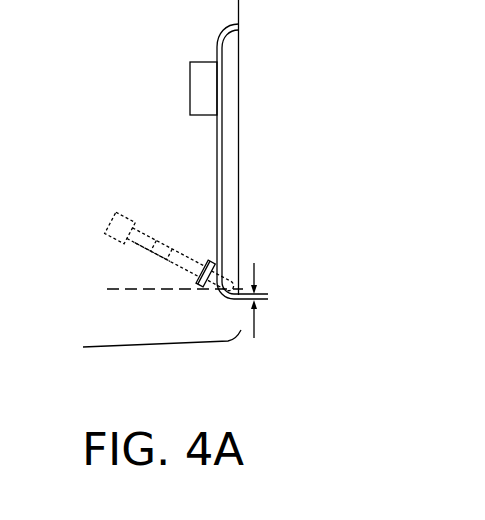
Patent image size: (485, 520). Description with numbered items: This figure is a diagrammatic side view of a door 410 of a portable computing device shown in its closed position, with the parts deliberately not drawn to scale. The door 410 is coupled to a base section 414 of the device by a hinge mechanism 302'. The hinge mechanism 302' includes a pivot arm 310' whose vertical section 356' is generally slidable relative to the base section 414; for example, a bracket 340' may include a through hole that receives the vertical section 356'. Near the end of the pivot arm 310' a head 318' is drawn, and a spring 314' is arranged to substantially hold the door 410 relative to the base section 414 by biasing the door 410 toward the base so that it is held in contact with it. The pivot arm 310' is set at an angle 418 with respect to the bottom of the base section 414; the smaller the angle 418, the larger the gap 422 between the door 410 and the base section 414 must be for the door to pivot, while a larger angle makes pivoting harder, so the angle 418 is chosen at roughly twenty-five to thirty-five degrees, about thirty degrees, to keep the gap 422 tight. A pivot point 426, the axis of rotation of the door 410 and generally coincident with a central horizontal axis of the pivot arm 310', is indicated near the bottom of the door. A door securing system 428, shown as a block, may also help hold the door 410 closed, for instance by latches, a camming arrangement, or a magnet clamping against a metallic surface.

The door 410 is at (228, 61).
The door securing system 428 is at (207, 95).
The vertical section 356' is at (239, 195).
The pivot point 426 is at (229, 287).
The gap 422 is at (256, 264).
The base section 414 is at (238, 307).
The angle 418 is at (161, 262).
The bracket 340' is at (209, 335).
The hinge mechanism 302' is at (166, 270).
The spring 314' is at (105, 270).
The head 318' is at (132, 195).
The pivot arm 310' is at (183, 214).